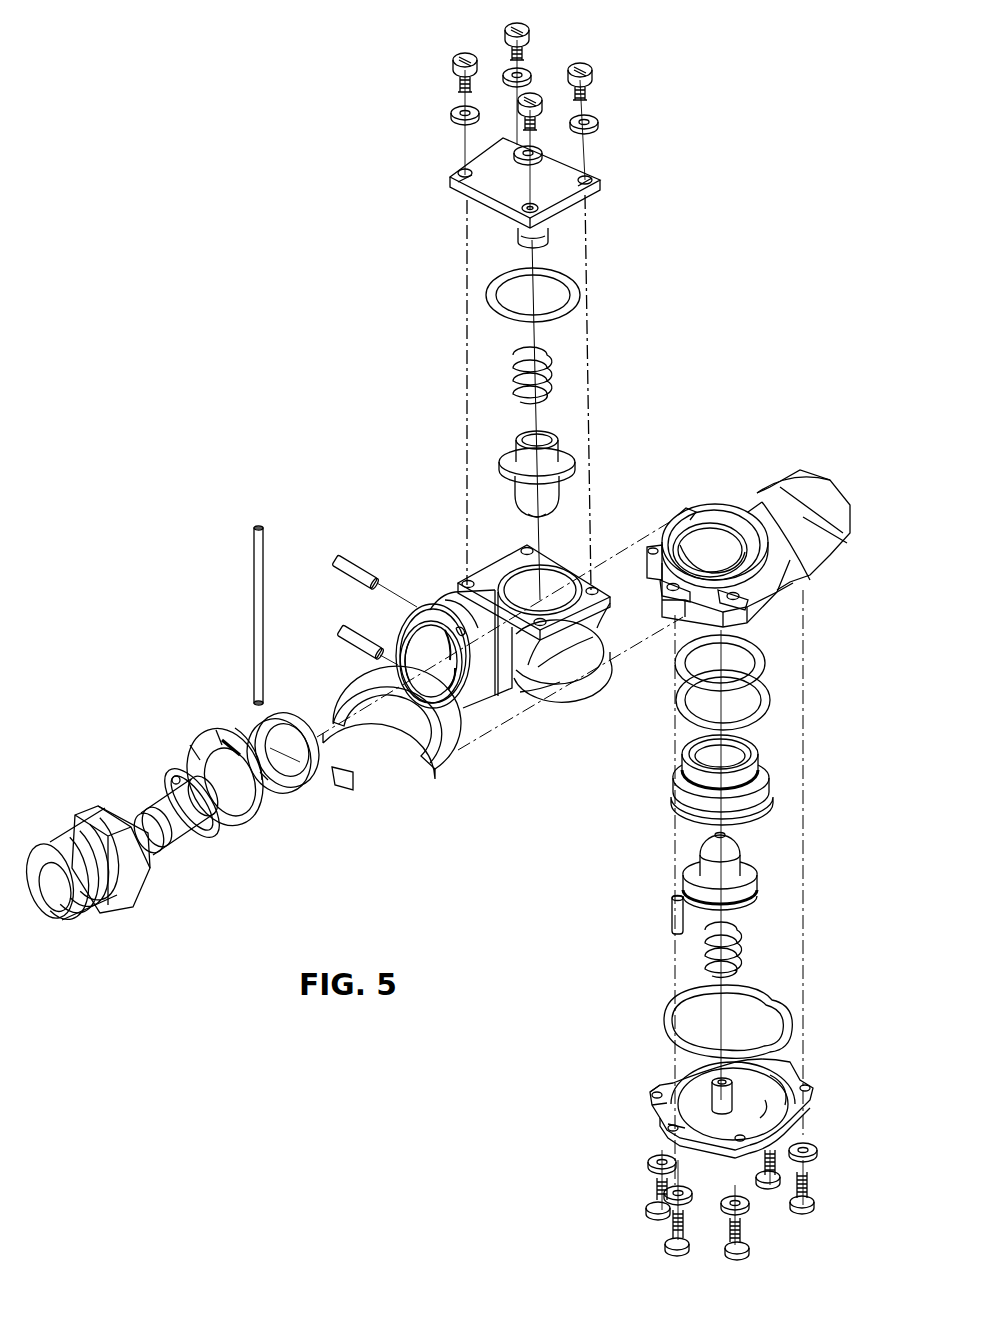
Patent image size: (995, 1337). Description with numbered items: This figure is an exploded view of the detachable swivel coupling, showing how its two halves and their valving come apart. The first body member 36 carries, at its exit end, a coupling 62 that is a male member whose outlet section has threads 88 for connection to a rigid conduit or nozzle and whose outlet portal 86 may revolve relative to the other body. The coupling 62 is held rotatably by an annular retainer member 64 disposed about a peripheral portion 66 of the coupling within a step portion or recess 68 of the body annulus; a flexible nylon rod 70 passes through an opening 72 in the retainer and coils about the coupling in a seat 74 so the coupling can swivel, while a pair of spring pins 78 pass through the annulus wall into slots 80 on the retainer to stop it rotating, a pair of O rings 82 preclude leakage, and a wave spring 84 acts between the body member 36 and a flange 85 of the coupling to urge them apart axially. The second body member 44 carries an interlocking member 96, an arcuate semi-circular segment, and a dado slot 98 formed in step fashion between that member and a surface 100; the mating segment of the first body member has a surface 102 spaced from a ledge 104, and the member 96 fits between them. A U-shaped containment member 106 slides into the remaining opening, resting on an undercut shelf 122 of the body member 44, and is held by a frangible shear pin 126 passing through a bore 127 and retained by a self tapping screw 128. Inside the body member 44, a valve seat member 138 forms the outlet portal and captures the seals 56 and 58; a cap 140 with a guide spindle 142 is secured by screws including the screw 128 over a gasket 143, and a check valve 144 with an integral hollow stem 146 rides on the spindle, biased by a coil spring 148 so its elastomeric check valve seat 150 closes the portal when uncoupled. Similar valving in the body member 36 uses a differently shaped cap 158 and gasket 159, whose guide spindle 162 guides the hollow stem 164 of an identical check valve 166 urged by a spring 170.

The first body member 36 is at (458, 598).
The second body member 44 is at (744, 494).
The seal 56 is at (752, 650).
The seal 58 is at (762, 712).
The coupling 62 is at (90, 810).
The annular retainer member 64 is at (200, 748).
The peripheral portion 66 is at (187, 838).
The step portion or recess 68 is at (410, 665).
The flexible rod 70 is at (255, 603).
The opening 72 is at (288, 799).
The seat 74 is at (235, 822).
The spring pins 78 is at (372, 635).
The slots 80 is at (235, 740).
The O rings 82 is at (305, 712).
The wave spring 84 is at (167, 770).
The flange 85 is at (172, 782).
The outlet portal 86 is at (63, 902).
The threads 88 is at (53, 845).
The interlocking member 96 is at (697, 514).
The dado slot 98 is at (765, 578).
The surface 100 is at (685, 522).
The surface 102 is at (552, 700).
The ledge 104 is at (598, 672).
The containment member 106 is at (402, 787).
The shelf 122 is at (666, 1120).
The frangible shear pin 126 is at (668, 918).
The bore 127 is at (668, 588).
The self tapping screw 128 is at (672, 1232).
The valve seat member 138 is at (772, 790).
The cap 140 is at (790, 1128).
The guide spindle 142 is at (710, 1092).
The gasket 143 is at (672, 1003).
The check valve 144 is at (755, 897).
The hollow stem 146 is at (732, 843).
The coil spring 148 is at (738, 955).
The check valve seat 150 is at (745, 870).
The cap 158 is at (595, 190).
The gasket 159 is at (575, 288).
The guide spindle 162 is at (525, 238).
The hollow stem 164 is at (560, 497).
The check valve 166 is at (483, 468).
The spring 170 is at (548, 380).